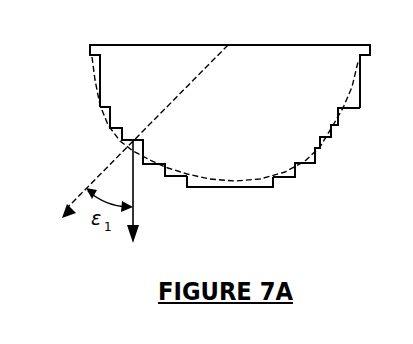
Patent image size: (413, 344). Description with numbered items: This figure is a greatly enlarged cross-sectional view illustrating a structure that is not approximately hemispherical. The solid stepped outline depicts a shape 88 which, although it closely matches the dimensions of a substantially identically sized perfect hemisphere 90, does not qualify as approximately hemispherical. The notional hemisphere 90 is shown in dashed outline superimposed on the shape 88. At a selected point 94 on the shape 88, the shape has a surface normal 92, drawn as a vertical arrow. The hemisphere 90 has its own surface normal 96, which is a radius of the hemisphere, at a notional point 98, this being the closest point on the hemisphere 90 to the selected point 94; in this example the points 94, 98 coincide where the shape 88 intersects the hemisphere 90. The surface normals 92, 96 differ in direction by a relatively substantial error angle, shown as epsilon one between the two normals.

The shape 88 is at (272, 188).
The hemisphere 90 is at (272, 174).
The surface normal 92 is at (133, 197).
The selected point 94 is at (154, 116).
The notional point 98 is at (131, 140).
The surface normal 96 is at (166, 105).